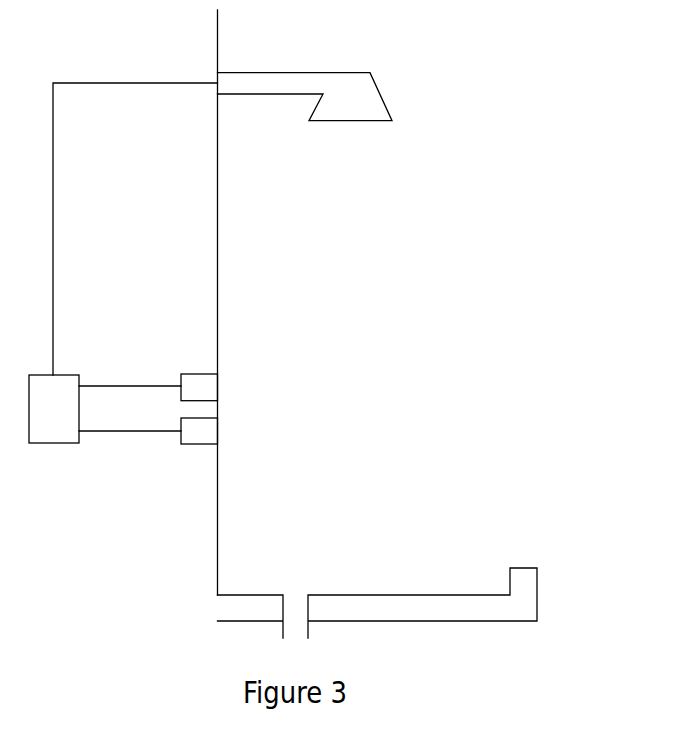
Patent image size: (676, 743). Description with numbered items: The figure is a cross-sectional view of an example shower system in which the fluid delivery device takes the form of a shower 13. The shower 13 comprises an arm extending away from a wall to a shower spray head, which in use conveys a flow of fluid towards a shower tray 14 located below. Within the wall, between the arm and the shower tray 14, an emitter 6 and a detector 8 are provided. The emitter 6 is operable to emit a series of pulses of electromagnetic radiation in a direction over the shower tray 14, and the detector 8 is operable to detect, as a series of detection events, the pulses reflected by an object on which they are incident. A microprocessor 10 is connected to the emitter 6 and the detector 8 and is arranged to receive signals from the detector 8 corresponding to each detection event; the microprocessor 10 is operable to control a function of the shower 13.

The emitter 6 is at (205, 386).
The detector 8 is at (205, 431).
The microprocessor 10 is at (53, 415).
The shower 13 is at (358, 101).
The shower tray 14 is at (443, 607).